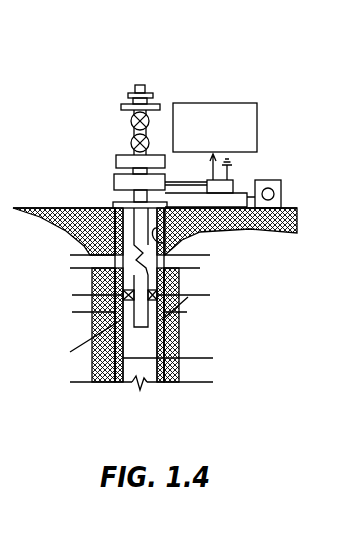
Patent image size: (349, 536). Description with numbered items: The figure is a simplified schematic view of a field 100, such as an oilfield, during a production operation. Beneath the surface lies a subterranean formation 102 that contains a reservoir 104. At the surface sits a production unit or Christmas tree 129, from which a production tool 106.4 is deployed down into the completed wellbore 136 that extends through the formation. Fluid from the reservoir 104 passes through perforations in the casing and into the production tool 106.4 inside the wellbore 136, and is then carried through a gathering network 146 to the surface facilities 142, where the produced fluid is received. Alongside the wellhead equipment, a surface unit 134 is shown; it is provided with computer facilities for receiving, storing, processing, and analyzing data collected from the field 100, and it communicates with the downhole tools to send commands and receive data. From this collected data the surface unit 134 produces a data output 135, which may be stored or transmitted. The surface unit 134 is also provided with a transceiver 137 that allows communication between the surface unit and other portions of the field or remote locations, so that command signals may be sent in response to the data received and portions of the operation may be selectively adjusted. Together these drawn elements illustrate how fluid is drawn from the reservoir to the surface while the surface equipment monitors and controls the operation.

The field 100 is at (75, 135).
The subterranean formation 102 is at (162, 320).
The reservoir 104 is at (216, 342).
The production tool 106.4 is at (115, 331).
The Christmas tree 129 is at (141, 85).
The surface unit 134 is at (208, 180).
The data output 135 is at (238, 103).
The completed wellbore 136 is at (165, 249).
The transceiver 137 is at (233, 173).
The surface facilities 142 is at (281, 188).
The gathering network 146 is at (247, 216).